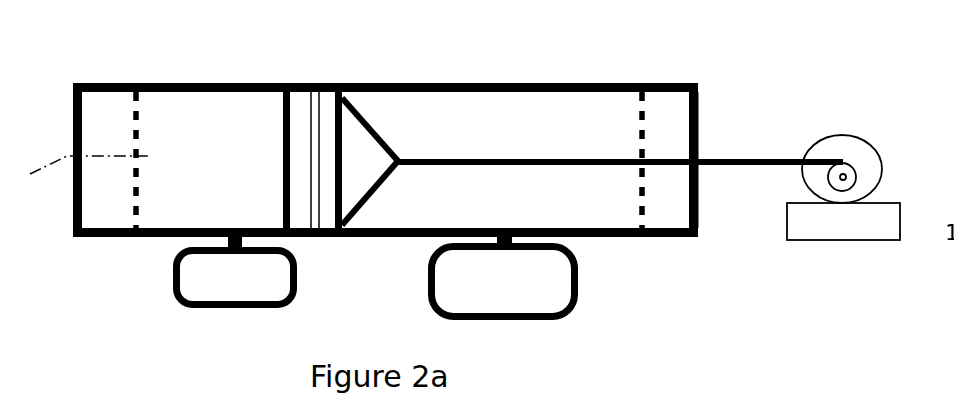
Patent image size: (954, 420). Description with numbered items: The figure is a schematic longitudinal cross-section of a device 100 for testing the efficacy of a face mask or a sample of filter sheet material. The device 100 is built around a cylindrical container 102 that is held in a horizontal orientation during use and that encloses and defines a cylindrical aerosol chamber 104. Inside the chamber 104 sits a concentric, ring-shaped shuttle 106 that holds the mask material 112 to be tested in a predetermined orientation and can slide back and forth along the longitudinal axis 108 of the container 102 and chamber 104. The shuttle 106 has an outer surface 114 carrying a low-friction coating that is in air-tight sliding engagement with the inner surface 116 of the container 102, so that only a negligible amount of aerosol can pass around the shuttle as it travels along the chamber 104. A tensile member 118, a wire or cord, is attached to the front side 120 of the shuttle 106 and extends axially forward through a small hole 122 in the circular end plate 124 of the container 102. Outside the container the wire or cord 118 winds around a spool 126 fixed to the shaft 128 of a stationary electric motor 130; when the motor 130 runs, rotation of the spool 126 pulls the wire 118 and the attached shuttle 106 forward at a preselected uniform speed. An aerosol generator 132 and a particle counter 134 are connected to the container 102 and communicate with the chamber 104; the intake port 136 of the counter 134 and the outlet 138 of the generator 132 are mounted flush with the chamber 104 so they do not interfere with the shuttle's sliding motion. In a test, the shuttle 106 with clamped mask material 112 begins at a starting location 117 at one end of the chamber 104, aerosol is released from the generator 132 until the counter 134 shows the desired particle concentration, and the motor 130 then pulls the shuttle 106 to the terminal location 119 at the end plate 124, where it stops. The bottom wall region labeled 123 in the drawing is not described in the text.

The device 100 is at (484, 207).
The cylindrical container 102 is at (706, 95).
The aerosol chamber 104 is at (240, 178).
The shuttle 106 is at (298, 223).
The longitudinal axis 108 is at (86, 180).
The mask material 112 is at (318, 100).
The outer surface 114 is at (303, 84).
The inner surface 116 is at (522, 92).
The starting location 117 is at (136, 207).
The tensile member 118 is at (582, 167).
The terminal location 119 is at (647, 207).
The front side 120 is at (362, 212).
The hole 122 is at (698, 164).
The bottom wall 123 is at (77, 218).
The end plate 124 is at (698, 128).
The spool 126 is at (849, 165).
The shaft 128 is at (847, 177).
The electric motor 130 is at (840, 130).
The aerosol generator 132 is at (553, 322).
The particle counter 134 is at (225, 312).
The intake port 136 is at (227, 239).
The outlet 138 is at (507, 232).